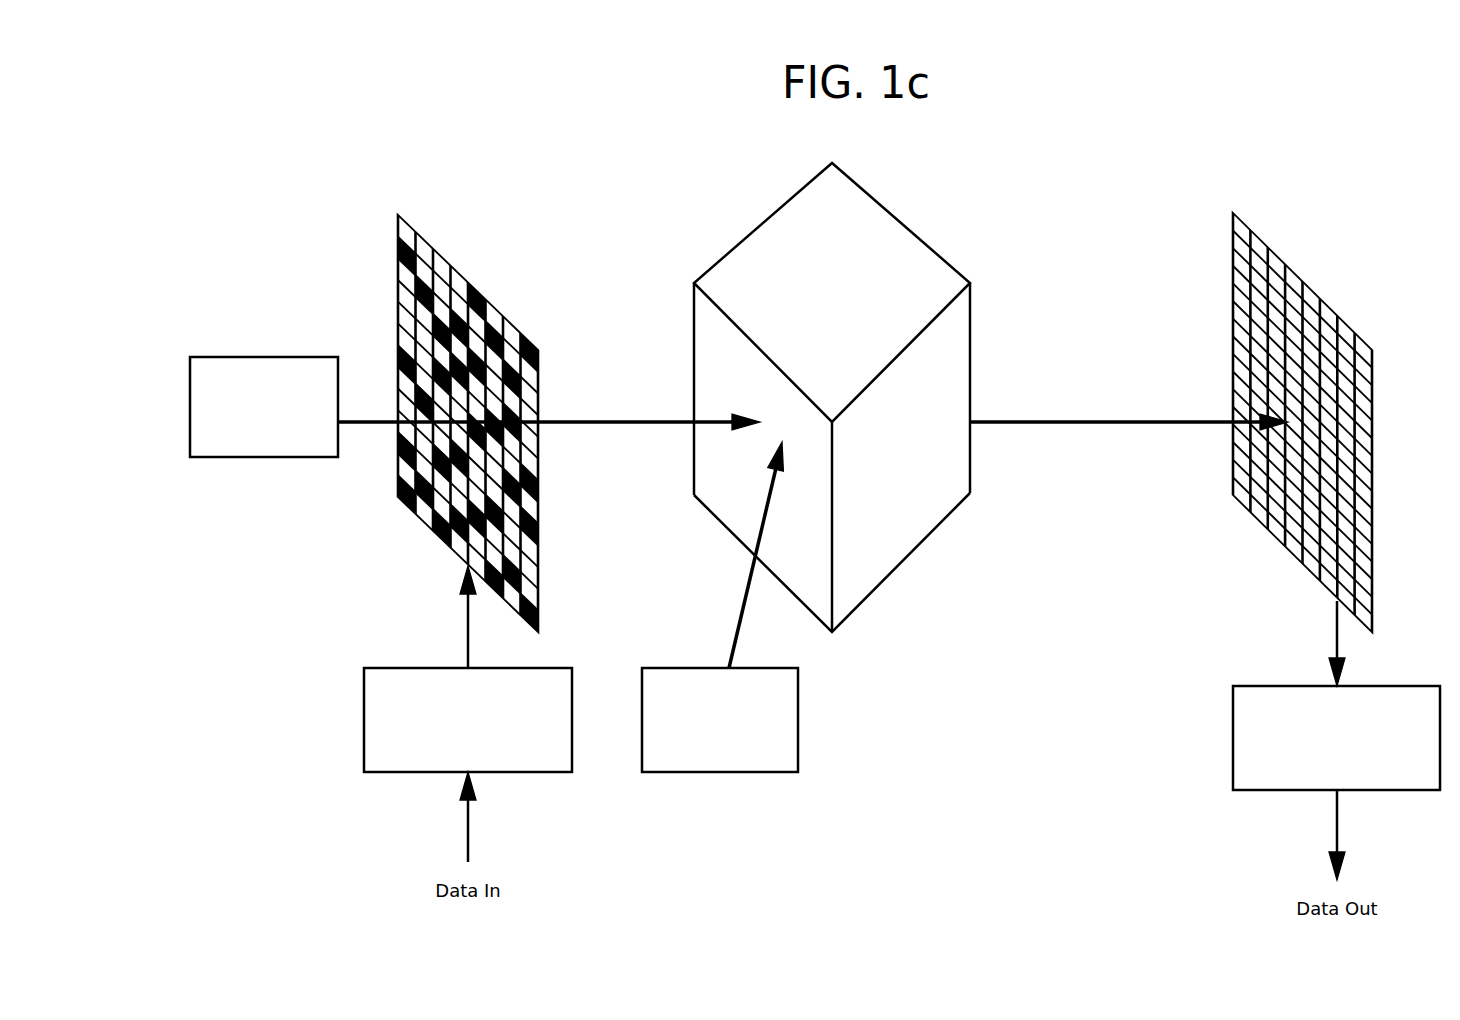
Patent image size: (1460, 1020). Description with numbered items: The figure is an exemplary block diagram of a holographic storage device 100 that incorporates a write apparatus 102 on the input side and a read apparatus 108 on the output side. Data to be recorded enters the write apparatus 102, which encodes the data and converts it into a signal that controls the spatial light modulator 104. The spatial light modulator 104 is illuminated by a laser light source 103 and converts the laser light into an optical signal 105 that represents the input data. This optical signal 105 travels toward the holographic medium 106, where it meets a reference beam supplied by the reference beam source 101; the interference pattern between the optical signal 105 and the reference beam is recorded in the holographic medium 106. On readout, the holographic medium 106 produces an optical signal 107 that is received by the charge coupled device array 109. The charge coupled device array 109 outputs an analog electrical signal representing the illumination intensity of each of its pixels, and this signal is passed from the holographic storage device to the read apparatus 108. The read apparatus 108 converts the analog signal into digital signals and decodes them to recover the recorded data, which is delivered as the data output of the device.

The holographic storage device 100 is at (234, 123).
The reference beam source 101 is at (720, 607).
The write apparatus 102 is at (468, 669).
The laser light source 103 is at (264, 407).
The spatial light modulator 104 is at (488, 300).
The optical signal 105 is at (657, 420).
The holographic medium 106 is at (762, 232).
The optical signal 107 is at (1093, 420).
The read apparatus 108 is at (1336, 695).
The charge coupled device array 109 is at (1316, 290).